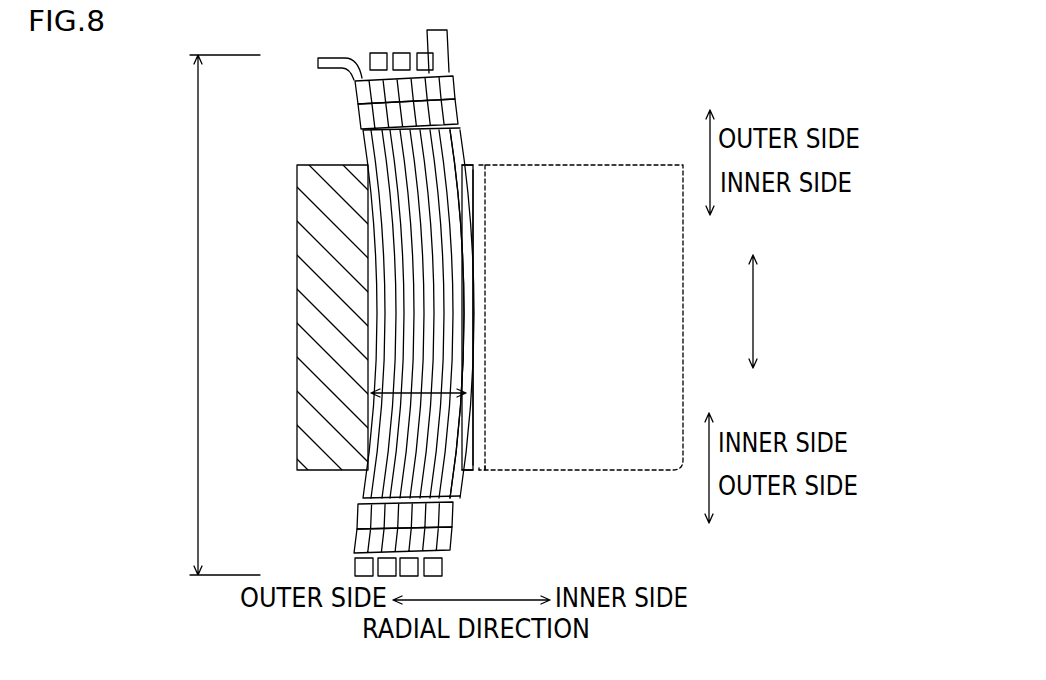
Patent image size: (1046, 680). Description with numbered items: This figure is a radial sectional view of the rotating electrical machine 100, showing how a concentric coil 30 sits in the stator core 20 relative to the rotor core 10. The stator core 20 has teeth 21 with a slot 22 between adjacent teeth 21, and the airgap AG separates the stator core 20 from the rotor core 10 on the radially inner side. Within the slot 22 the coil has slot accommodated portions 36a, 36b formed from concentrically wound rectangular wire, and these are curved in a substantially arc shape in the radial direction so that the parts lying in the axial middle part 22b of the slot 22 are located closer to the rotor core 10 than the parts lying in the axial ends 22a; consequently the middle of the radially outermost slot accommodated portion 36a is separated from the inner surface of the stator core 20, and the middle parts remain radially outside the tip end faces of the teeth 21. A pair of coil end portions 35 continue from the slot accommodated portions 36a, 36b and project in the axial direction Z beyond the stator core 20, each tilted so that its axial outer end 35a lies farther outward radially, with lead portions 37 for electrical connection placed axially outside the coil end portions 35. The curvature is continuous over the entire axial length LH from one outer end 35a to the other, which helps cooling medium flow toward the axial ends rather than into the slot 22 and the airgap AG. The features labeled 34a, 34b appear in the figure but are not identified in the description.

The rotating electrical machine 100 is at (675, 113).
The rotor core 10 is at (592, 162).
The stator core 20 is at (327, 273).
The teeth 21 is at (475, 193).
The slot 22 is at (418, 382).
The axial ends of slot 22a is at (483, 176).
The axial middle part of slot 22b is at (483, 324).
The concentric coil 30 is at (341, 126).
The radially outer side of coil 34a is at (370, 152).
The radially inner side of coil 34b is at (452, 148).
The coil end portion 35 is at (471, 104).
The axial outer end of coil end portion 35a is at (398, 58).
The slot accommodated portion 36a is at (387, 312).
The slot accommodated portion 36b is at (462, 290).
The lead portion 37 is at (322, 58).
The airgap AG is at (487, 481).
The entire axial length LH is at (211, 315).
The axial direction Z is at (762, 311).